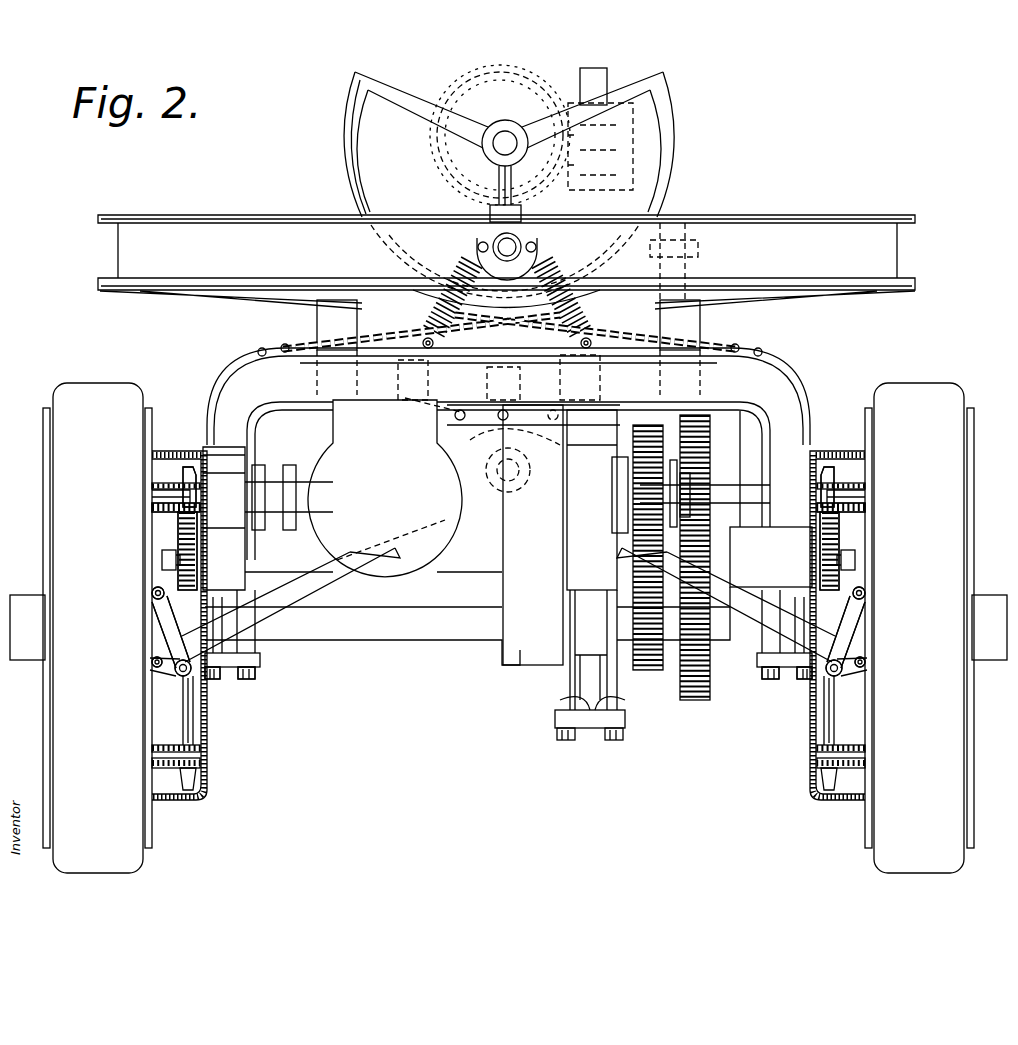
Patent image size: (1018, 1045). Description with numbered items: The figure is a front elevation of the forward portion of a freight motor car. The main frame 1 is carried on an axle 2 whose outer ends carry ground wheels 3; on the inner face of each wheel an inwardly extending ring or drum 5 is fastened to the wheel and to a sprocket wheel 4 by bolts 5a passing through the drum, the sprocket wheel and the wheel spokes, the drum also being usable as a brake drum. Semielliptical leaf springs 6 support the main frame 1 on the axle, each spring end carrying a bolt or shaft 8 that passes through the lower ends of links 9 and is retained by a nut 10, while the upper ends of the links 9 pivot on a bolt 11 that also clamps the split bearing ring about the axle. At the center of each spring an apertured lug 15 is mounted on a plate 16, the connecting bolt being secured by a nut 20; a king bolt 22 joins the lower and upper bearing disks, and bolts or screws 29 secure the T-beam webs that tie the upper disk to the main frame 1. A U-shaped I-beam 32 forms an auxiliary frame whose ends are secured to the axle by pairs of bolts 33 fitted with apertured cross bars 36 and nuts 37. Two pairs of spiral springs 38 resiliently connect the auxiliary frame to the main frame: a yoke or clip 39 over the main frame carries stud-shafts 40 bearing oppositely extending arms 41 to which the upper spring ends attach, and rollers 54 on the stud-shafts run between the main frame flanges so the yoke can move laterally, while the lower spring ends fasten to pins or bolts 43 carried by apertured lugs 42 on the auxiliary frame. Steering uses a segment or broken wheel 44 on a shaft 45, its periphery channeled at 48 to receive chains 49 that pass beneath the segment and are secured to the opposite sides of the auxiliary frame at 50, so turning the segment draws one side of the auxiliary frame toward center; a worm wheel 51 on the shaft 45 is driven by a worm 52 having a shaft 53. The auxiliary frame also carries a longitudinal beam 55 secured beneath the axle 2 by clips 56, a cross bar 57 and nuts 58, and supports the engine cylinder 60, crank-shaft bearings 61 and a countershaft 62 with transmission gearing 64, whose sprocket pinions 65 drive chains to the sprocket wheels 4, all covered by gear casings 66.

The main frame 1 is at (233, 214).
The axle 2 is at (447, 640).
The ground wheels 3 is at (78, 395).
The sprocket wheels 4 is at (183, 472).
The ring or drum 5 is at (152, 496).
The bolts 5a is at (152, 508).
The semielliptical leaf springs 6 is at (305, 585).
The bolt or shaft 8 is at (176, 672).
The links 9 is at (160, 630).
The nut 10 is at (168, 652).
The bolt 11 is at (152, 590).
The apertured lug 15 is at (515, 460).
The plate 16 is at (597, 500).
The nut 20 is at (470, 482).
The king bolt 22 is at (487, 375).
The bolts or screws 29 is at (475, 420).
The I-beam auxiliary frame 32 is at (240, 372).
The bolts 33 is at (246, 679).
The cross bars 36 is at (262, 660).
The nuts 37 is at (212, 680).
The spiral springs 38 is at (450, 280).
The yoke or clip 39 is at (500, 212).
The stud-shafts 40 is at (523, 247).
The arms 41 is at (484, 244).
The apertured lugs 42 is at (447, 352).
The pins or bolts 43 is at (420, 338).
The segment or broken wheel 44 is at (352, 105).
The shaft 45 is at (500, 138).
The channeled periphery 48 is at (520, 135).
The chains 49 is at (285, 344).
The chain connection point 50 is at (262, 350).
The worm wheel 51 is at (437, 128).
The worm 52 is at (590, 150).
The shaft 53 is at (565, 85).
The rollers 54 is at (505, 282).
The longitudinal member or beam 55 is at (590, 660).
The clips 56 is at (590, 733).
The cross bar 57 is at (610, 702).
The nuts 58 is at (612, 742).
The engine cylinder 60 is at (332, 462).
The bearings 61 is at (233, 505).
The countershaft 62 is at (475, 565).
The transmission gearing 64 is at (673, 557).
The sprocket pinions 65 is at (162, 556).
The gear casings 66 is at (210, 797).